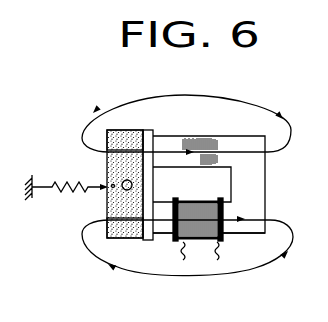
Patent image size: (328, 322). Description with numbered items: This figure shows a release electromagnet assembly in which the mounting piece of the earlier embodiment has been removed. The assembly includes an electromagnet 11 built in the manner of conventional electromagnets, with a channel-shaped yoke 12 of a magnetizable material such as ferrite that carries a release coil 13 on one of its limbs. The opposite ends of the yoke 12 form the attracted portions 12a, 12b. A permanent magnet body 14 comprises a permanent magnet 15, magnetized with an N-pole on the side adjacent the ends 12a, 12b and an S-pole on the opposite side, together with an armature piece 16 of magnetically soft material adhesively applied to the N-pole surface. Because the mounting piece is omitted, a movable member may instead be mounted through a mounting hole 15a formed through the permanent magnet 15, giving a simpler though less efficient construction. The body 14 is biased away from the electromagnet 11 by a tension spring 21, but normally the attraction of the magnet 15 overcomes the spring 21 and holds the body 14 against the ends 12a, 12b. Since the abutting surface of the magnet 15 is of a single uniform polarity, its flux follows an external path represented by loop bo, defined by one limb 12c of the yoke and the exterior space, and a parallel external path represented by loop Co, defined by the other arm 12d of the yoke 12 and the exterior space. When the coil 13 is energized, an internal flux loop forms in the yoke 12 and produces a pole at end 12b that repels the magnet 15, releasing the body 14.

The electromagnet 11 is at (279, 160).
The yoke 12 is at (258, 179).
The attracted portion 12a is at (158, 158).
The attracted portion 12b is at (163, 237).
The limb of the yoke 12c is at (232, 224).
The arm of the yoke 12d is at (227, 150).
The release coil 13 is at (196, 226).
The permanent magnet body 14 is at (94, 136).
The permanent magnet 15 is at (110, 168).
The mounting hole 15a is at (122, 192).
The armature piece 16 is at (148, 134).
The tension spring 21 is at (60, 178).
The loop c0 Co is at (254, 107).
The loop b0 bo is at (168, 276).